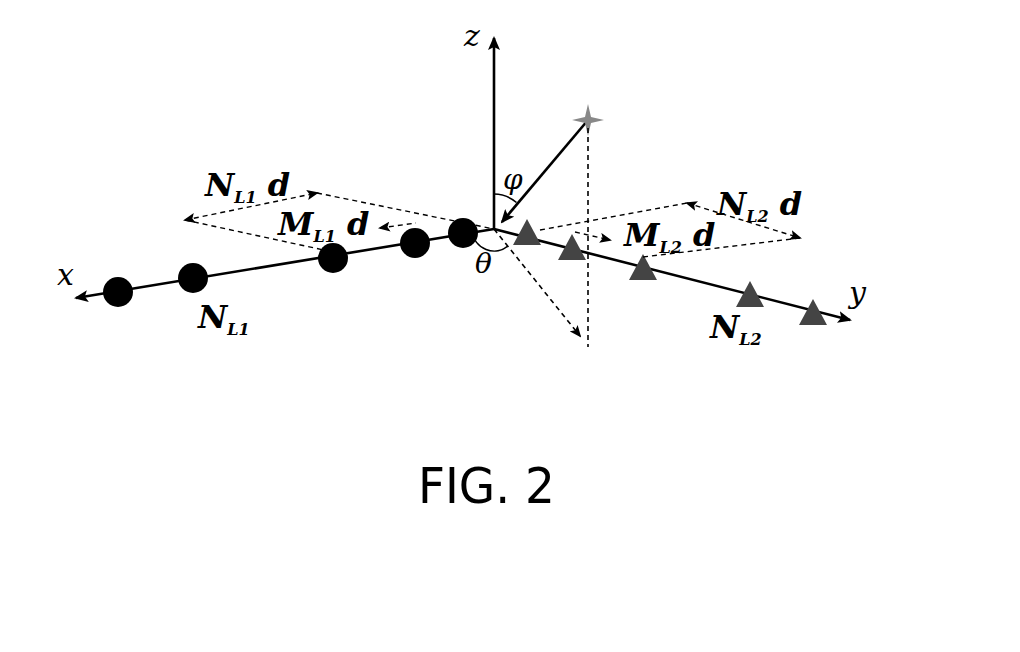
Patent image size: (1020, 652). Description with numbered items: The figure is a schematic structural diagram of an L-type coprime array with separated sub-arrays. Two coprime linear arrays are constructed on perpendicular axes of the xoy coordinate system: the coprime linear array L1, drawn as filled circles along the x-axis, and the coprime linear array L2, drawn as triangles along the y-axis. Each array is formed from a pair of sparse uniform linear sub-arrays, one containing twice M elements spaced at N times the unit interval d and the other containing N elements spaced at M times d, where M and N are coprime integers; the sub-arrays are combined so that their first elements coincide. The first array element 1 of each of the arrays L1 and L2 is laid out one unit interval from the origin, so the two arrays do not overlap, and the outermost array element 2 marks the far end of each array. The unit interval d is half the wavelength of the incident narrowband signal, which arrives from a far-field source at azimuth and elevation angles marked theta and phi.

The first array element 1 is at (500, 219).
The 2M-th array element 2 is at (477, 323).
The coprime linear array L1 is at (241, 166).
The coprime linear array L2 is at (409, 200).